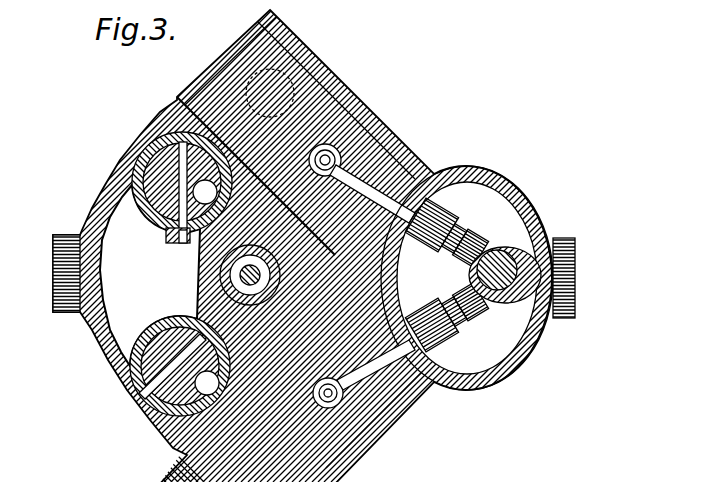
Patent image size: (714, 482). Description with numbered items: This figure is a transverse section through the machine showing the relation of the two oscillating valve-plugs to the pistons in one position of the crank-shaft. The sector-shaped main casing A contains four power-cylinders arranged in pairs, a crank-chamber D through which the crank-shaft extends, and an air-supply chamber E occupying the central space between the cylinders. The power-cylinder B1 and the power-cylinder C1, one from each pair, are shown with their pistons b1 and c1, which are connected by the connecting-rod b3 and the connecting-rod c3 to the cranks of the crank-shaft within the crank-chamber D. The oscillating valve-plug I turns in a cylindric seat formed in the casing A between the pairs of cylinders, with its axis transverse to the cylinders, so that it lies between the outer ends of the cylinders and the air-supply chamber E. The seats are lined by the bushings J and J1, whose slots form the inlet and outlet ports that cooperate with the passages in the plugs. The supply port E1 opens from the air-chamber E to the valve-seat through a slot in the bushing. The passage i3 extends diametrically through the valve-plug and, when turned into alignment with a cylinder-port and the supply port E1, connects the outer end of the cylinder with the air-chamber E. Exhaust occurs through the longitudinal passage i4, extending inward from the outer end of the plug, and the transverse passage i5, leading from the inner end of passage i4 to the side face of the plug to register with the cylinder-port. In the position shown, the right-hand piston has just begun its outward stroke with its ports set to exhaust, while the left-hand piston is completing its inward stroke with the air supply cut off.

The main casing A is at (100, 194).
The air-supply chamber E is at (150, 275).
The bushing J1 is at (161, 133).
The bushing J is at (155, 427).
The oscillating valve-plug I is at (160, 373).
The supply port i3 is at (167, 229).
The longitudinal exhaust passage i4 is at (168, 148).
The transverse exhaust passage i5 is at (205, 192).
The power-cylinder C1 is at (357, 100).
The piston c1 is at (380, 143).
The connecting-rod c3 is at (417, 160).
The crank-chamber D is at (497, 212).
The supply port E1 is at (357, 241).
The power-cylinder B1 is at (363, 447).
The piston b1 is at (393, 407).
The connecting-rod b3 is at (443, 387).